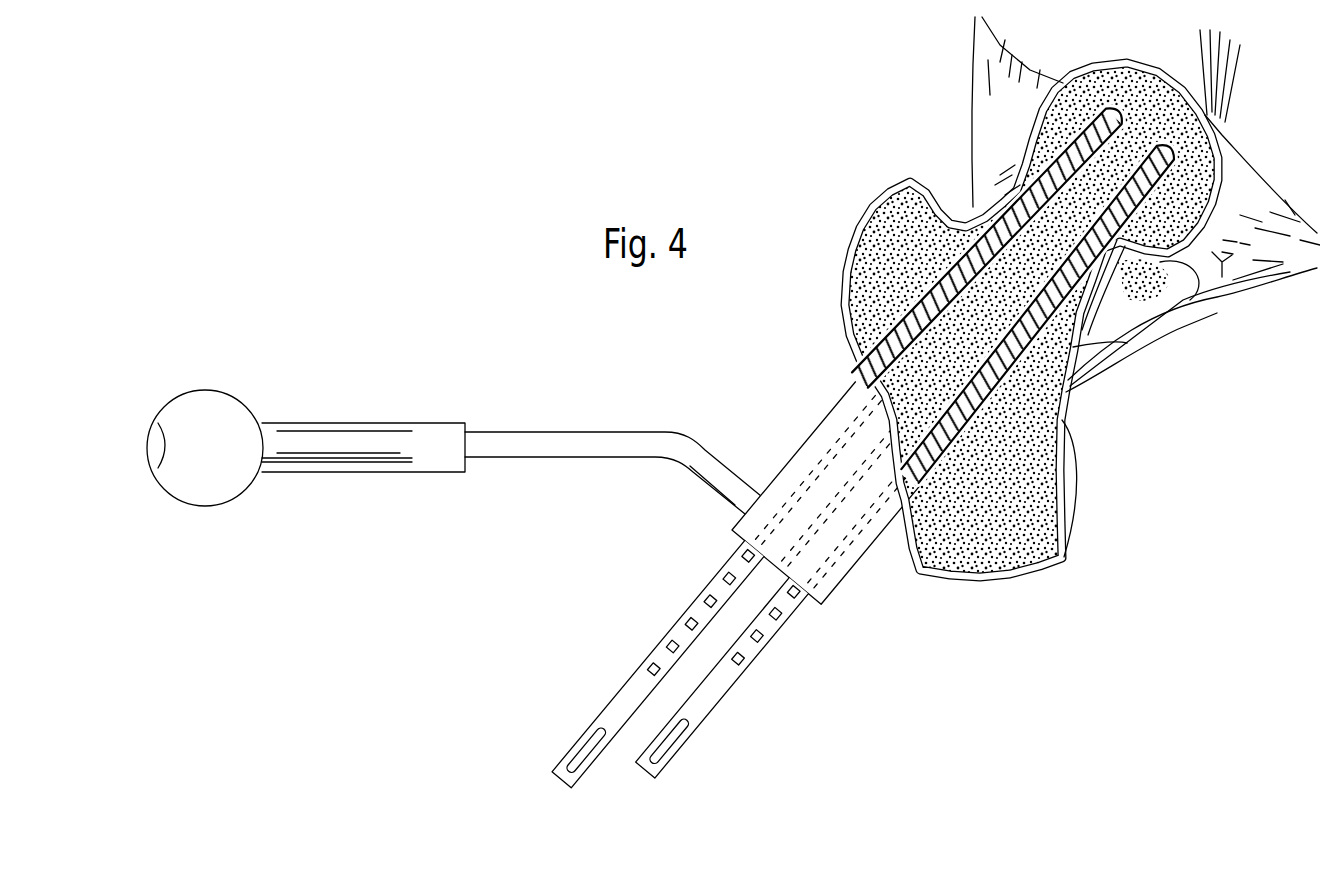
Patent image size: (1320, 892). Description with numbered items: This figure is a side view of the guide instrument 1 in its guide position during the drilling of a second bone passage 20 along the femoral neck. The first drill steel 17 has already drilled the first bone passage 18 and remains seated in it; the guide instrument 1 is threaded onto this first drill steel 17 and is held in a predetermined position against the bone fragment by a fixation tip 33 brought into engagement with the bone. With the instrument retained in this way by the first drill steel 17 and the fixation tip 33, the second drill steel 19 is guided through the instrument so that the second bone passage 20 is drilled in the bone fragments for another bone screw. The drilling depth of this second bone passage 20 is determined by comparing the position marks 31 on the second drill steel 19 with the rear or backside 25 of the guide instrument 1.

The guide instrument 1 is at (803, 438).
The first drill steel 17 is at (985, 335).
The first bone passage 18 is at (975, 377).
The second drill steel 19 is at (993, 243).
The second bone passage 20 is at (930, 317).
The rear or backside of the guide instrument 25 is at (773, 566).
The position marks 31 is at (700, 597).
The fixation tip 33 is at (862, 372).